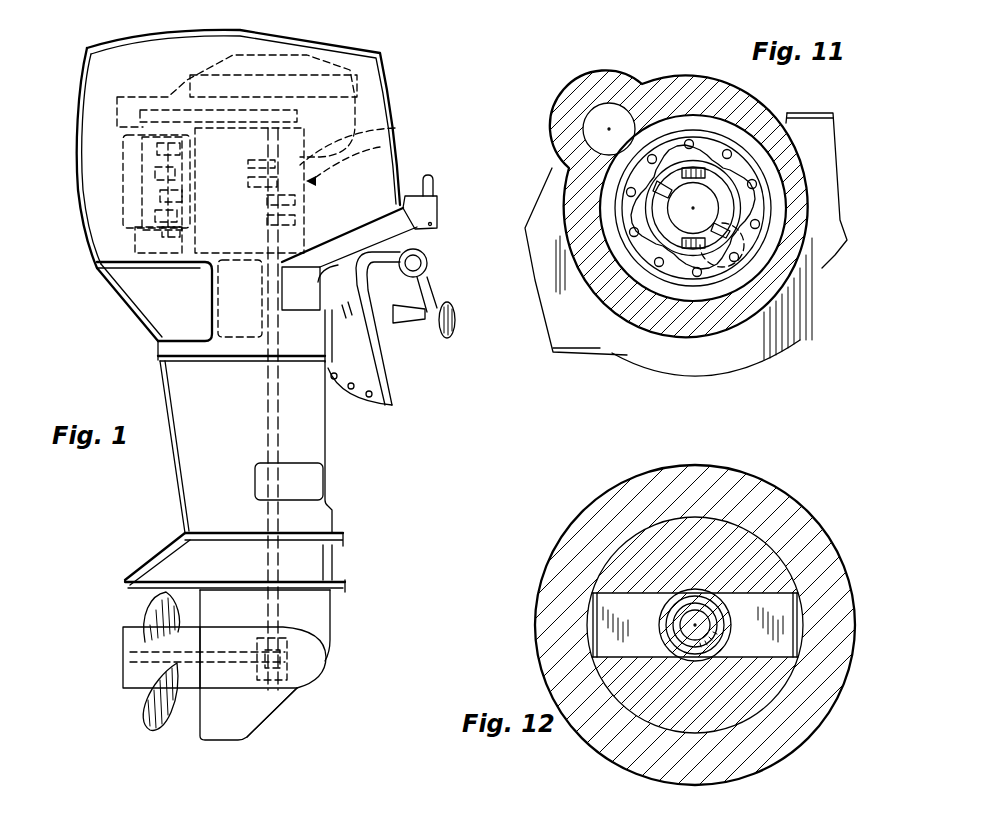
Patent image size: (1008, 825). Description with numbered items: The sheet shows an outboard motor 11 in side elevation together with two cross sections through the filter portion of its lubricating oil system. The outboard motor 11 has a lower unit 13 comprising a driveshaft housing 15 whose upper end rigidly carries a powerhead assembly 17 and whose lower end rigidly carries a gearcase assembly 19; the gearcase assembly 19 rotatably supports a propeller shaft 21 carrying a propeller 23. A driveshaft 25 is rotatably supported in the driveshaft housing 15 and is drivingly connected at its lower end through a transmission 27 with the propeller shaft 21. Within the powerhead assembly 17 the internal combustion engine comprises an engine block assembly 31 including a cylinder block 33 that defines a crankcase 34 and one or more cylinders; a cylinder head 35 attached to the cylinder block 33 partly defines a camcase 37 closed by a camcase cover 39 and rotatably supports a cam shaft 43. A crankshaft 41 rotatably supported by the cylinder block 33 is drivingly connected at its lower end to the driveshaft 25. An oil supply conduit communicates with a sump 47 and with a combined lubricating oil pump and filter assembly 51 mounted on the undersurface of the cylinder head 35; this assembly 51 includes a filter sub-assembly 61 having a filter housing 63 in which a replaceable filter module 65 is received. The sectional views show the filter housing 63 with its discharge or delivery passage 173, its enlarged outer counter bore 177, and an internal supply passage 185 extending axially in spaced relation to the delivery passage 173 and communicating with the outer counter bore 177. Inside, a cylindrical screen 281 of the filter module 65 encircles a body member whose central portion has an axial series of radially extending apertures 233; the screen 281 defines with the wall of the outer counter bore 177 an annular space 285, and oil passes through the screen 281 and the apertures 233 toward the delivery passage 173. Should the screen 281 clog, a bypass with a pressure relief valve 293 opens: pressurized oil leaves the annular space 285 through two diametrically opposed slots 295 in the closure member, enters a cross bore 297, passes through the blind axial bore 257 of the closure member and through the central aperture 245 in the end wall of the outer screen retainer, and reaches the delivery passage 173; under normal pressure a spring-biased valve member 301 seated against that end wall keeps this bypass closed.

In FIG. 1, the outboard motor 11 is at (343, 453).
In FIG. 1, the lower unit 13 is at (203, 462).
In FIG. 1, the driveshaft housing 15 is at (175, 377).
In FIG. 1, the powerhead assembly 17 is at (406, 76).
In FIG. 1, the gearcase assembly 19 is at (300, 609).
In FIG. 1, the propeller shaft 21 is at (125, 657).
In FIG. 1, the propeller 23 is at (158, 598).
In FIG. 1, the driveshaft 25 is at (280, 425).
In FIG. 1, the transmission 27 is at (292, 690).
In FIG. 1, the engine block assembly 31 is at (397, 148).
In FIG. 1, the cylinder block 33 is at (395, 124).
In FIG. 1, the crankcase 34 is at (343, 178).
In FIG. 1, the cylinder head 35 is at (125, 188).
In FIG. 1, the camcase 37 is at (125, 172).
In FIG. 1, the camcase cover 39 is at (125, 207).
In FIG. 1, the crankshaft 41 is at (265, 195).
In FIG. 1, the cam shaft 43 is at (150, 160).
In FIG. 1, the sump 47 is at (245, 291).
In FIG. 1, the combined lubricating oil pump and filter assembly 51 is at (122, 248).
In FIG. 11, the filter sub-assembly 61 is at (583, 333).
In FIG. 12, the filter sub-assembly 61 is at (852, 700).
In FIG. 11, the filter housing 63 is at (655, 352).
In FIG. 11, the replaceable filter module 65 is at (808, 270).
In FIG. 12, the replaceable filter module 65 is at (736, 538).
In FIG. 11, the discharge or delivery passage 173 is at (700, 232).
In FIG. 11, the outer counter bore 177 is at (690, 115).
In FIG. 11, the internal supply passage 185 is at (606, 125).
In FIG. 11, the radially extending apertures 233 is at (735, 205).
In FIG. 12, the central aperture 245 is at (717, 648).
In FIG. 12, the blind axial bore 257 is at (700, 600).
In FIG. 11, the cylindrical screen 281 is at (772, 193).
In FIG. 11, the annular space 285 is at (728, 283).
In FIG. 12, the pressure relief valve 293 is at (676, 645).
In FIG. 12, the slots 295 is at (603, 632).
In FIG. 12, the cross bore 297 is at (607, 600).
In FIG. 12, the valve member 301 is at (716, 616).